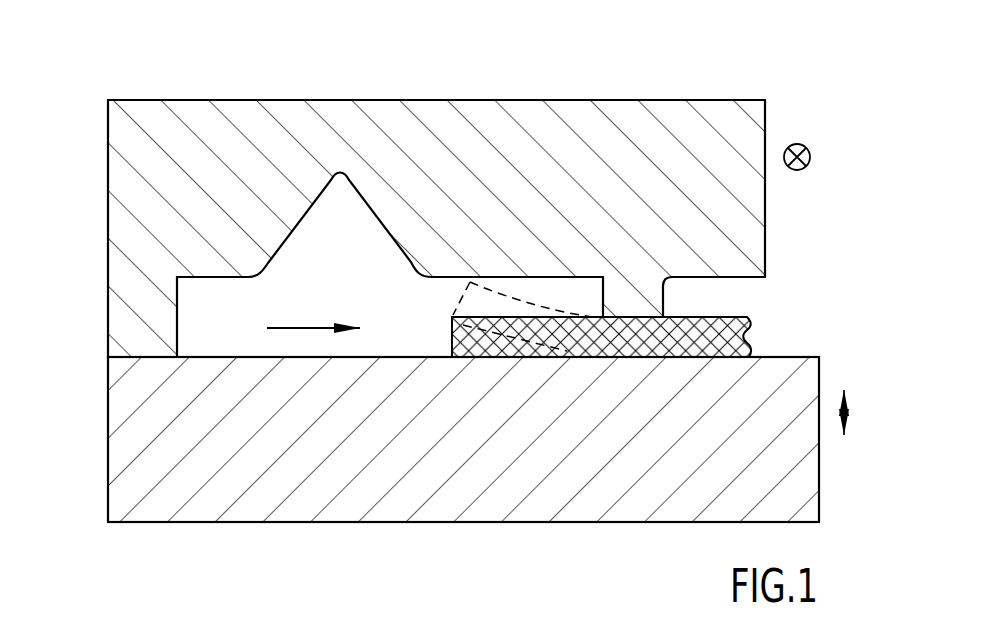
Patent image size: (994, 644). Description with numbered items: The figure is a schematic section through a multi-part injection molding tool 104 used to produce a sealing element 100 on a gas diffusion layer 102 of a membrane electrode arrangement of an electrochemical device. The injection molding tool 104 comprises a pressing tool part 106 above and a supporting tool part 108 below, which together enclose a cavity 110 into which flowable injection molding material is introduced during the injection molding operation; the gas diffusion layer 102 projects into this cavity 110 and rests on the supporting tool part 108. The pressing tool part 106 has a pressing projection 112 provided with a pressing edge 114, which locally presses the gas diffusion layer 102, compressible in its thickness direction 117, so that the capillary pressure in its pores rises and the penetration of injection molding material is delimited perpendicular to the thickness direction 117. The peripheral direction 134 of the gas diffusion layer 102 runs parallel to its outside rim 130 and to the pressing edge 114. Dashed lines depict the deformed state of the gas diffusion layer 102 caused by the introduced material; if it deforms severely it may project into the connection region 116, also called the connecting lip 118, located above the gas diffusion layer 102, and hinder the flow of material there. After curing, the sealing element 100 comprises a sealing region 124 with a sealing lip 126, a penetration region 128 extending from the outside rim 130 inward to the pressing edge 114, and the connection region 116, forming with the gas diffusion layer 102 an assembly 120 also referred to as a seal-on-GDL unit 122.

The sealing element 100 is at (253, 265).
The gas diffusion layer 102 is at (722, 333).
The injection molding tool 104 is at (147, 100).
The pressing tool part 106 is at (747, 247).
The supporting tool part 108 is at (790, 483).
The cavity 110 is at (432, 313).
The pressing projection 112 is at (637, 305).
The pressing edge 114 is at (597, 317).
The connection region 116 is at (593, 293).
The thickness direction 117 is at (844, 412).
The connecting lip 118 is at (527, 293).
The assembly 120 is at (345, 361).
The seal-on-GDL unit 122 is at (212, 361).
The sealing region 124 is at (217, 315).
The sealing lip 126 is at (340, 163).
The penetration region 128 is at (542, 342).
The outside rim 130 is at (452, 320).
The peripheral direction 134 is at (810, 157).